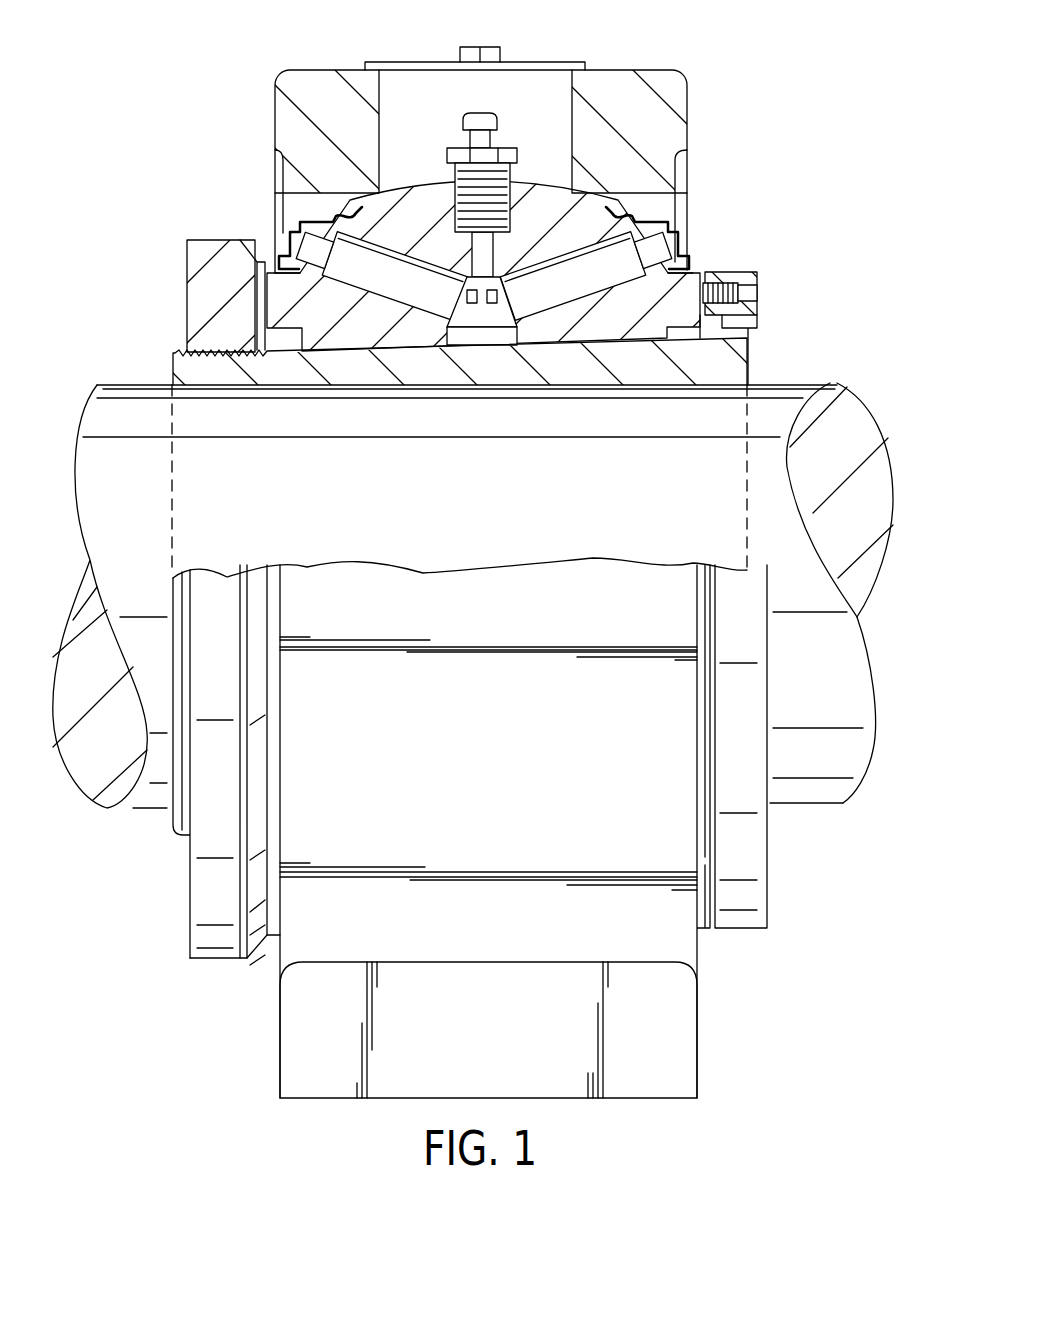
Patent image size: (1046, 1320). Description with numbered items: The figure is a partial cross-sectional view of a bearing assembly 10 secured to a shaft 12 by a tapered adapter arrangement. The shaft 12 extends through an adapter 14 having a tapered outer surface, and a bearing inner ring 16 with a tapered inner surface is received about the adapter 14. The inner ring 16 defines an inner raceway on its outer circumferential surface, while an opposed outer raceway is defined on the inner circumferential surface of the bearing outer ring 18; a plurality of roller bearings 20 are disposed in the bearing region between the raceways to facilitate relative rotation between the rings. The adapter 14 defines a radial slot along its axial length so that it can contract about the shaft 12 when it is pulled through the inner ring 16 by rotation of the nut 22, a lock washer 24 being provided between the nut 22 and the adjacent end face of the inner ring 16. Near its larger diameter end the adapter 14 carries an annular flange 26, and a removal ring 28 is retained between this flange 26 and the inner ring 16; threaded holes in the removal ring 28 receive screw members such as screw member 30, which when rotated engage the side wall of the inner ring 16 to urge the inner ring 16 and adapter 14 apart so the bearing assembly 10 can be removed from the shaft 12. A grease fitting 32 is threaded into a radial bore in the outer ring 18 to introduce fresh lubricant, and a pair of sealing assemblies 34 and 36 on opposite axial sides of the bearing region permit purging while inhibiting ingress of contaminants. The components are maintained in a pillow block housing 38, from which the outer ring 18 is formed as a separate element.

The bearing assembly 10 is at (784, 138).
The shaft 12 is at (790, 387).
The adapter 14 is at (172, 373).
The bearing inner ring 16 is at (690, 270).
The bearing outer ring 18 is at (550, 187).
The roller bearings 20 is at (437, 297).
The nut 22 is at (200, 238).
The lock washer 24 is at (255, 238).
The annular flange 26 is at (750, 326).
The removal ring 28 is at (747, 272).
The screw member 30 is at (738, 293).
The grease fitting 32 is at (463, 130).
The sealing assembly 34 is at (268, 212).
The sealing assembly 36 is at (702, 228).
The pillow block housing 38 is at (686, 86).